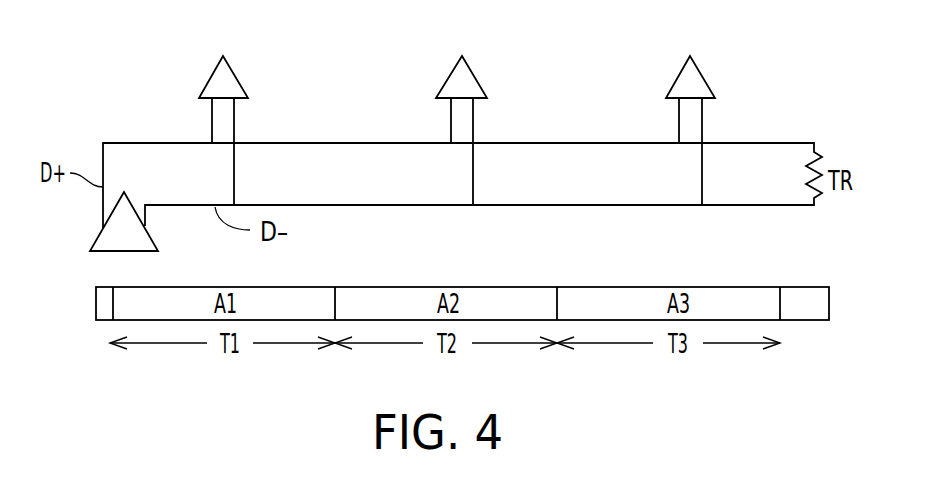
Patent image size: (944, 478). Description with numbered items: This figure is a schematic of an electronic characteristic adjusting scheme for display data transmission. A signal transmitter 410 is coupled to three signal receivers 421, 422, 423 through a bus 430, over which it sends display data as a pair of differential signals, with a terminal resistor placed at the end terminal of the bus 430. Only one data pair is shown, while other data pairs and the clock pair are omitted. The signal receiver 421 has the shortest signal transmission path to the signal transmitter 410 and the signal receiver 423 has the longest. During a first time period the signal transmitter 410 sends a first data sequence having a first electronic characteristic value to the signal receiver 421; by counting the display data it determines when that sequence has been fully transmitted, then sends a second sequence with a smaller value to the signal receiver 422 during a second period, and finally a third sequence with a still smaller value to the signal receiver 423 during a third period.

The signal transmitter 410 is at (155, 240).
The signal receiver 421 is at (240, 83).
The signal receiver 422 is at (480, 83).
The signal receiver 423 is at (707, 83).
The bus 430 is at (576, 143).